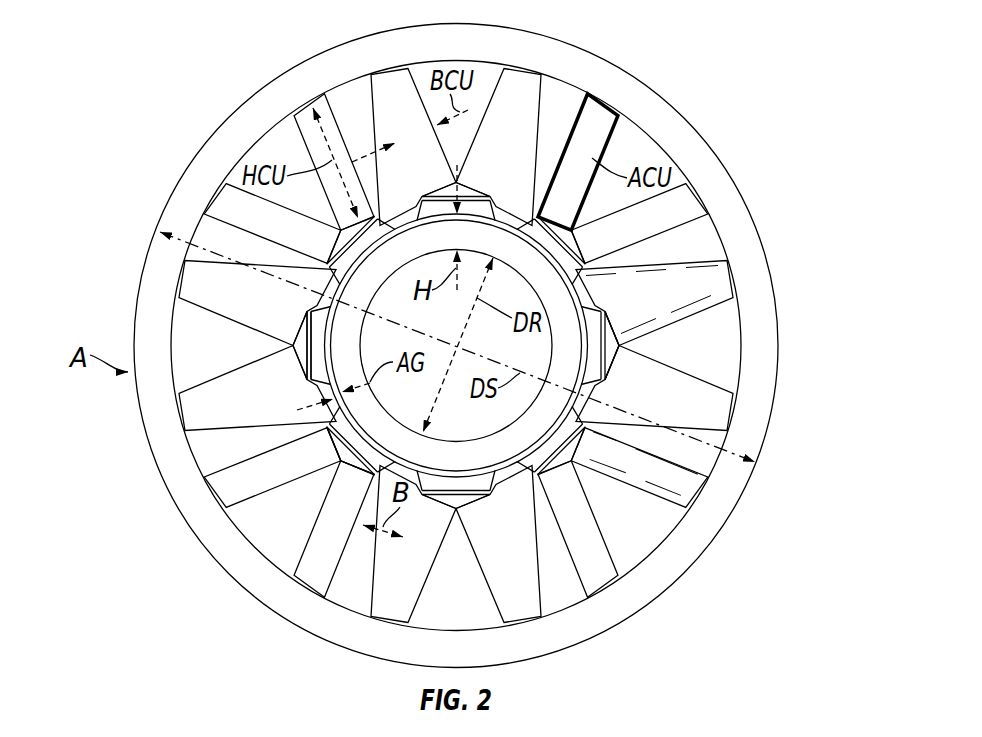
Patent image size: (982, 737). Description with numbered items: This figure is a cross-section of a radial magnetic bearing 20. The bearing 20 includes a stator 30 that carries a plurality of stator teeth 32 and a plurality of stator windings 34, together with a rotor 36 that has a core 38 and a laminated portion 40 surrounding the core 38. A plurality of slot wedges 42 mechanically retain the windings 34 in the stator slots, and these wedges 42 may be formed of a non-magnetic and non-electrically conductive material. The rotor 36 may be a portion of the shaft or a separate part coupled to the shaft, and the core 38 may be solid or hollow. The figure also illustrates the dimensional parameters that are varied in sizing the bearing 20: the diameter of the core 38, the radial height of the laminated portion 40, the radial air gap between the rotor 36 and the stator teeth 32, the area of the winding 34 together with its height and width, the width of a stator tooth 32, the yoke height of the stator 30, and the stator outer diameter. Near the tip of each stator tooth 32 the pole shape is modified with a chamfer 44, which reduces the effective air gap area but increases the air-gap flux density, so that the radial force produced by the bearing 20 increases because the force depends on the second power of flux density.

The radial magnetic bearing 20 is at (745, 73).
The stator 30 is at (692, 121).
The stator teeth 32 is at (555, 157).
The stator windings 34 is at (707, 303).
The rotor 36 is at (327, 365).
The core 38 is at (470, 324).
The laminated portion 40 is at (402, 263).
The slot wedges 42 is at (345, 455).
The chamfer 44 is at (428, 478).